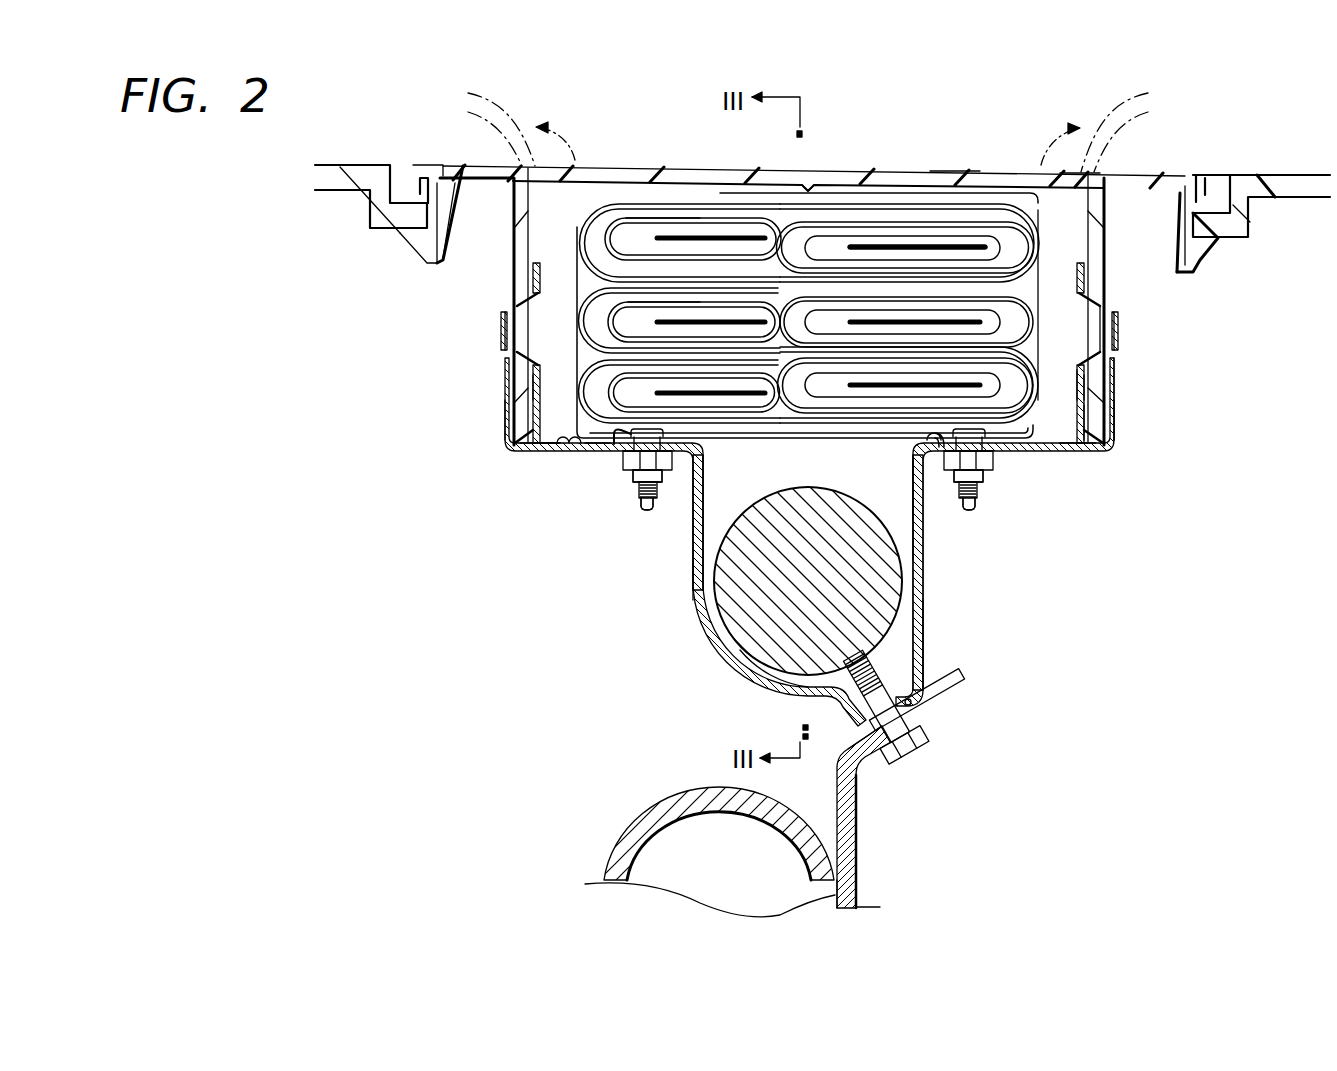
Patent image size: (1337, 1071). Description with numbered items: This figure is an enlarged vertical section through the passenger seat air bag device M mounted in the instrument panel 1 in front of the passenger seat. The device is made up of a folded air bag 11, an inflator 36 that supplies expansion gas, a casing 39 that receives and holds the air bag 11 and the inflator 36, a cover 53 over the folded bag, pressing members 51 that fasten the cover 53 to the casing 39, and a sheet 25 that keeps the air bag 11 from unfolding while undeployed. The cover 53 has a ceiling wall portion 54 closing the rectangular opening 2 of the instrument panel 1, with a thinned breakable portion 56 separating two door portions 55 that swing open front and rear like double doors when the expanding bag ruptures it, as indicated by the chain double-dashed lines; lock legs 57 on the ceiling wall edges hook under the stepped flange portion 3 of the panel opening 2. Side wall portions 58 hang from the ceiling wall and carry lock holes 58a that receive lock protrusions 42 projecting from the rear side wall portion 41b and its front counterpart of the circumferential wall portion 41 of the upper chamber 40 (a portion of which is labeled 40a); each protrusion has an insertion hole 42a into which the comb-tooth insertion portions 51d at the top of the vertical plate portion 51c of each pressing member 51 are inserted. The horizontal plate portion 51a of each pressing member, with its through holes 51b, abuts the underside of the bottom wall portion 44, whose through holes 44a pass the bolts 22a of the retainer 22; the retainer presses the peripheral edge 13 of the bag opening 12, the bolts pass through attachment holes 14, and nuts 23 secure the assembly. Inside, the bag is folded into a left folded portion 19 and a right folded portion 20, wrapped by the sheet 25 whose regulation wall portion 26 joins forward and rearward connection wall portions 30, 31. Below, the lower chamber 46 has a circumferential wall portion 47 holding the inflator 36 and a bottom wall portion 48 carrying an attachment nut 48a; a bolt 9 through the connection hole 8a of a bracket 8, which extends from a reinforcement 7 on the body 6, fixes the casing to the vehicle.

The instrument panel 1 is at (345, 163).
The opening 2 is at (410, 165).
The flange portion 3 is at (398, 192).
The body 6 is at (978, 845).
The reinforcement 7 is at (860, 906).
The bracket 8 is at (856, 848).
The connection hole 8a is at (872, 755).
The bolt 9 is at (912, 757).
The air bag 11 is at (743, 222).
The opening 12 is at (700, 452).
The peripheral edge 13 is at (614, 445).
The attachment holes 14 is at (930, 436).
The left folded portion 19 is at (566, 240).
The right folded portion 20 is at (566, 320).
The retainer 22 is at (1000, 456).
The bolts 22a is at (646, 511).
The nuts 23 is at (631, 476).
The sheet 25 is at (1041, 224).
The regulation wall portion 26 is at (895, 208).
The connection wall portion 30 is at (530, 365).
The connection wall portion 31 is at (1087, 352).
The inflator 36 is at (742, 640).
The casing 39 is at (948, 656).
The upper chamber 40 is at (1102, 282).
The bracket portion 40a is at (1105, 240).
The circumferential wall portion 41 is at (552, 452).
The rear side wall portion 41b is at (1091, 410).
The lock protrusions 42 is at (533, 345).
The insertion hole 42a is at (537, 375).
The bottom wall portion 44 is at (583, 447).
The through holes 44a is at (930, 465).
The lower chamber 46 is at (712, 627).
The circumferential wall portion 47 is at (925, 612).
The bottom wall portion 48 is at (760, 684).
The attachment nut 48a is at (960, 708).
The pressing members 51 is at (349, 440).
The horizontal plate portion 51a is at (515, 452).
The through holes 51b is at (1262, 440).
The vertical plate portion 51c is at (507, 447).
The insertion portions 51d is at (505, 312).
The cover 53 is at (1145, 168).
The ceiling wall portion 54 is at (450, 174).
The door portions 55 is at (592, 176).
The breakable portion 56 is at (809, 184).
The lock legs 57 is at (420, 250).
The side wall portions 58 is at (517, 247).
The lock holes 58a is at (503, 330).
The air bag device M is at (508, 644).